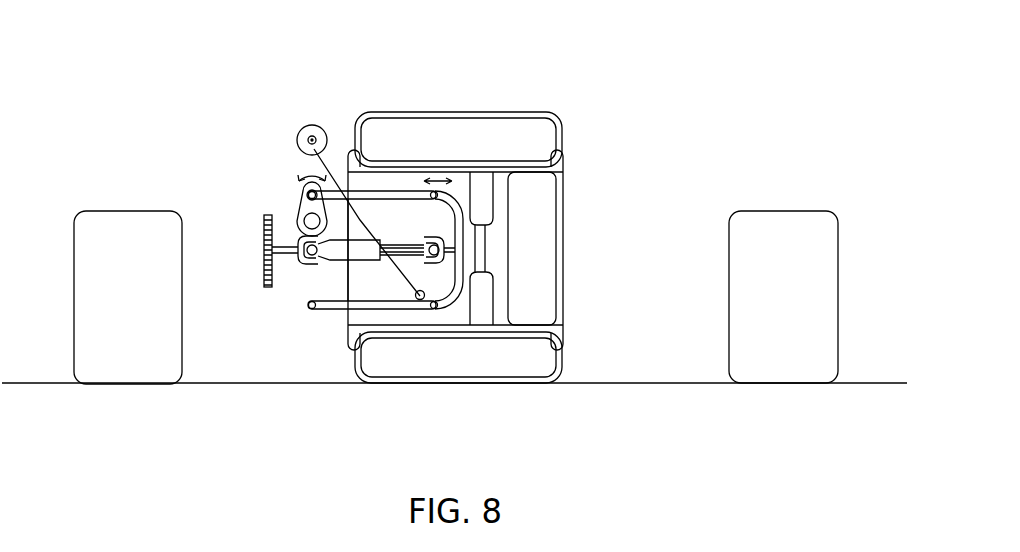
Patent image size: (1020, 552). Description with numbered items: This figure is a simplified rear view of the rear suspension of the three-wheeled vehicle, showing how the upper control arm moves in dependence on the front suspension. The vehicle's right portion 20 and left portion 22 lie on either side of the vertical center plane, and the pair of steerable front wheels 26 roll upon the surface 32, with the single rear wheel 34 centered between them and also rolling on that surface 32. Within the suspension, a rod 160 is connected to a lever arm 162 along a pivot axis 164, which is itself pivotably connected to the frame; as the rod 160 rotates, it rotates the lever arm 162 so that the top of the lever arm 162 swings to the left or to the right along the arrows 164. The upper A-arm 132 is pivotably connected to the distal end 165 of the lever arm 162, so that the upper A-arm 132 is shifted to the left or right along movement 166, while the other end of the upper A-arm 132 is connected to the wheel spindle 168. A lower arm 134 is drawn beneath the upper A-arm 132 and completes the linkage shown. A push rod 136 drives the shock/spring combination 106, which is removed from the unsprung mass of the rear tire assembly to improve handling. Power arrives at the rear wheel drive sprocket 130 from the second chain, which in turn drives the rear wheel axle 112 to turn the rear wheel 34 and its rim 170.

The right portion 20 is at (806, 91).
The left portion 22 is at (113, 91).
The steerable front wheels 26 is at (140, 211).
The surface 32 is at (873, 382).
The rear wheel 34 is at (560, 130).
The shock/spring combination 106 is at (302, 130).
The jackshaft / rear wheel axle 112 is at (340, 253).
The rear wheel drive sprocket 130 is at (264, 288).
The upper A-arm 132 is at (383, 195).
The lower link bar 134 is at (385, 309).
The push rod 136 is at (323, 190).
The rod 160 is at (307, 217).
The lever arm 162 is at (302, 207).
The pivot axis 164 is at (310, 177).
The distal end of lever arm 165 is at (307, 188).
The movement 166 is at (443, 172).
The wheel spindle 168 is at (460, 213).
The rim 170 is at (537, 325).